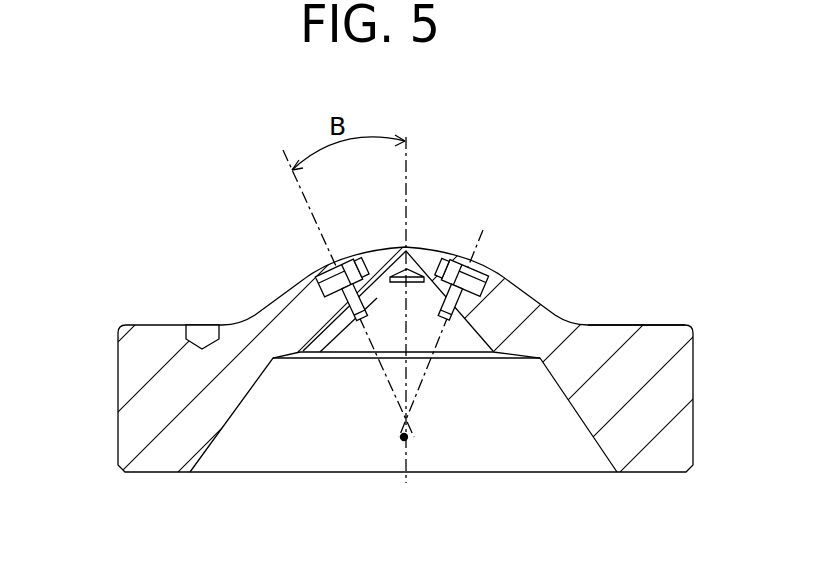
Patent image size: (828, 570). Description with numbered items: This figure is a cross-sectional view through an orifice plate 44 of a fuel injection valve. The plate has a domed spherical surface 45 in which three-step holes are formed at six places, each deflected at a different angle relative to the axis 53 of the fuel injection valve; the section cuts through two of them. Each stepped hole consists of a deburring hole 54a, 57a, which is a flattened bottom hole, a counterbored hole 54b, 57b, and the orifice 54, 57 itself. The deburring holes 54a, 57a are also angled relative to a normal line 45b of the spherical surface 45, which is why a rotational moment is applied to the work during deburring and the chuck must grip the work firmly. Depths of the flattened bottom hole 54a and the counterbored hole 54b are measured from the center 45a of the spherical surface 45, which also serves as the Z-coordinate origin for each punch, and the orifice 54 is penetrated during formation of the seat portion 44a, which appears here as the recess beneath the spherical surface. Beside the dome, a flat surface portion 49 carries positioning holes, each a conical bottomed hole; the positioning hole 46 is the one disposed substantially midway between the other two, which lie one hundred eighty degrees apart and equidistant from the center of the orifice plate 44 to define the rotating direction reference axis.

The orifice plate 44 is at (163, 453).
The seat portion 44a is at (467, 330).
The spherical surface 45 is at (423, 262).
The center of the spherical surface 45a is at (401, 441).
The normal line of the spherical surface 45b is at (295, 151).
The positioning hole 46 is at (200, 326).
The flat surface portion 49 is at (625, 326).
The axis of the fuel injection valve 53 is at (403, 448).
The orifice 54 is at (325, 293).
The deburring hole 54a is at (335, 268).
The counterbored hole 54b is at (315, 277).
The orifice 57 is at (474, 302).
The deburring hole 57a is at (463, 258).
The counterbored hole 57b is at (486, 273).